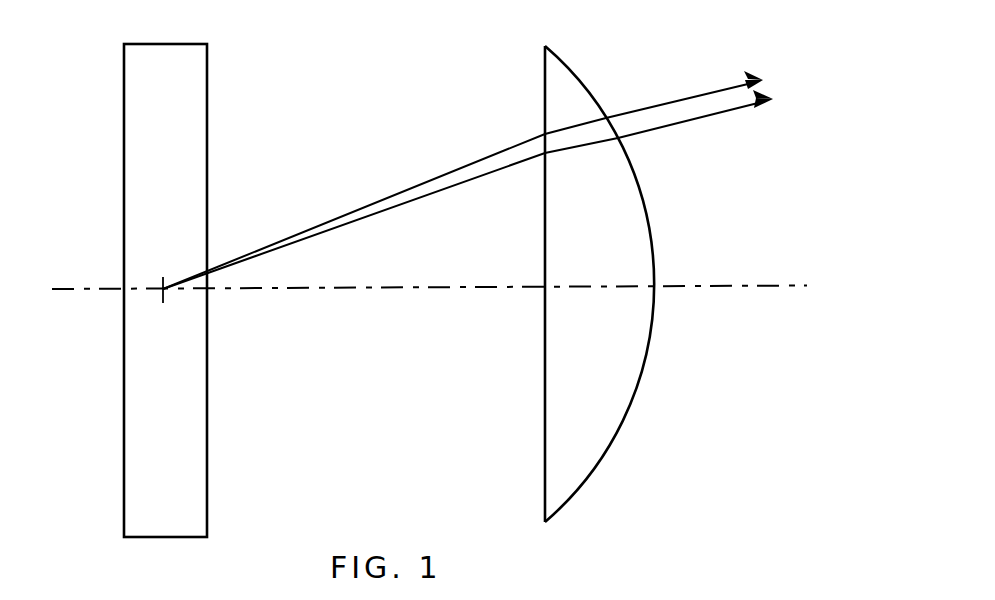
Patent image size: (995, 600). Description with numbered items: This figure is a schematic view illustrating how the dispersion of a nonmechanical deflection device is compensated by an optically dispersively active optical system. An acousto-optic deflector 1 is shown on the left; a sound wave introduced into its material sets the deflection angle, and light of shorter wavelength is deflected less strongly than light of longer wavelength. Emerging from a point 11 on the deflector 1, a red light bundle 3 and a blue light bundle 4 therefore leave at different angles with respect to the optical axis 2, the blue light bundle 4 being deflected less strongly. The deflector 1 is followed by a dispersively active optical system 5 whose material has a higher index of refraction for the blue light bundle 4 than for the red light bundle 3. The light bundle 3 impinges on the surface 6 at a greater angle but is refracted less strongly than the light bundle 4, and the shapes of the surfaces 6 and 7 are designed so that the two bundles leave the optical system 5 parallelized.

The acousto-optic deflector 1 is at (142, 472).
The light emitting point 11 is at (163, 289).
The optical axis 2 is at (717, 286).
The red light bundle 3 is at (332, 218).
The blue light bundle 4 is at (409, 206).
The dispersively active optical system 5 is at (599, 284).
The surface 6 is at (545, 381).
The surface 7 is at (654, 232).